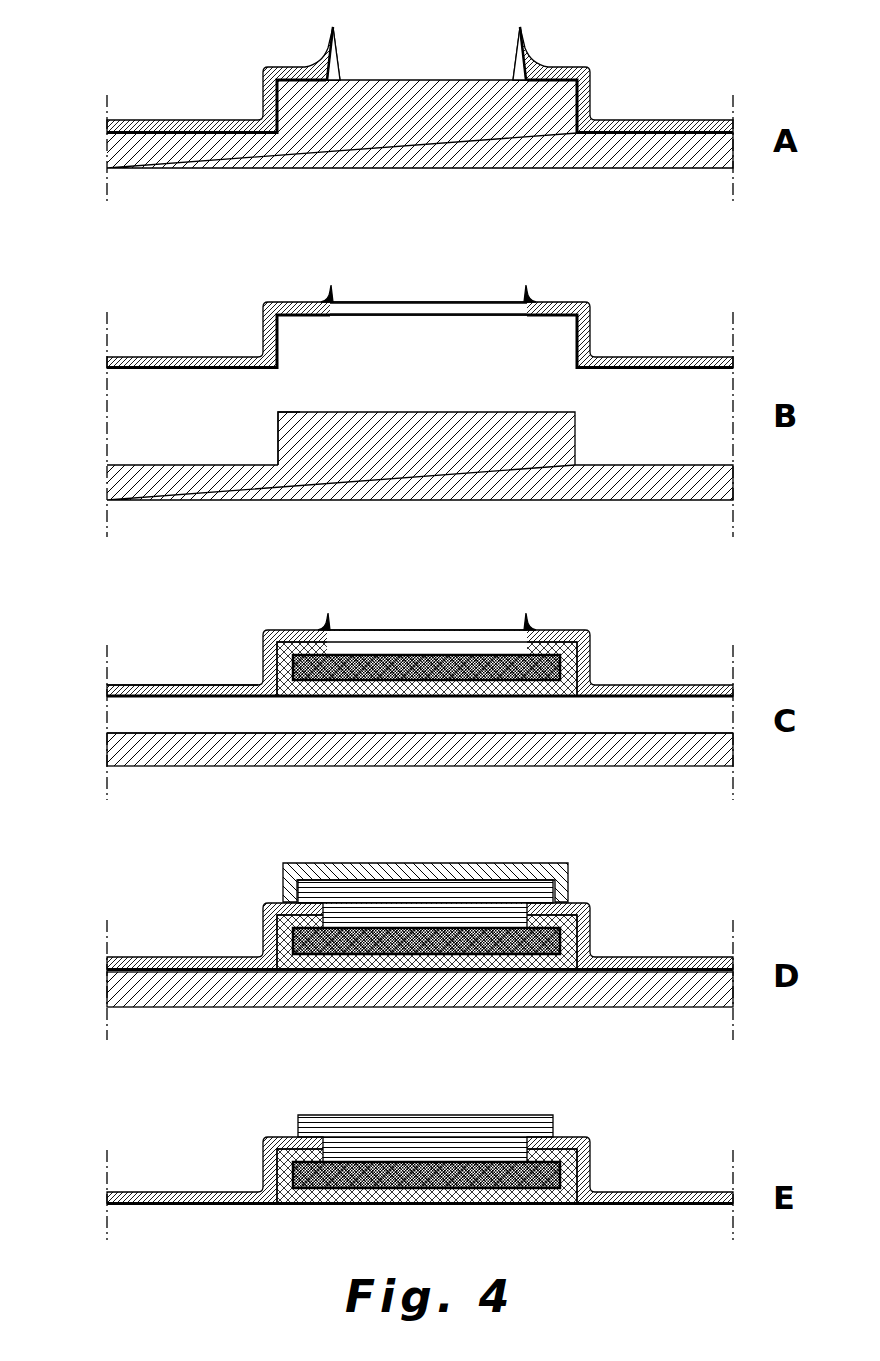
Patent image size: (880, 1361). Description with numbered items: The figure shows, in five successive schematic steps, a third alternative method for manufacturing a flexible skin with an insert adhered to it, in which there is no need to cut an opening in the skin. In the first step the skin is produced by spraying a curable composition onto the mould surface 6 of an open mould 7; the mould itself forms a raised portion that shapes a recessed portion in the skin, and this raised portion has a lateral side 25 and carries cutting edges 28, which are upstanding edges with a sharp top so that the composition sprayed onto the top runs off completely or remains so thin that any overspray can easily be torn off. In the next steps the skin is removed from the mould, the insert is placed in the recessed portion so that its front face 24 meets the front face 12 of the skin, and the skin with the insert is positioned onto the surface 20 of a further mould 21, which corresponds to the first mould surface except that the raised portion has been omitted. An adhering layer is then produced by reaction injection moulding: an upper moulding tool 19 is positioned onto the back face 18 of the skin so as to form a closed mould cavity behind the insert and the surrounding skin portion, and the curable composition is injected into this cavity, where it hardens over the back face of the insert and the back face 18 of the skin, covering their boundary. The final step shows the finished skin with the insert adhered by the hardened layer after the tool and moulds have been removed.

The mould surface 6 is at (202, 463).
The open mould 7 is at (485, 138).
The front face of the skin 12 is at (213, 698).
The back face of the skin 18 is at (220, 683).
The upper moulding tool 19 is at (557, 875).
The further mould surface 20 is at (620, 731).
The further mould 21 is at (637, 757).
The front face of the insert 24 is at (500, 697).
The lateral side of the raised portion 25 is at (277, 430).
The cutting edges 28 is at (334, 63).